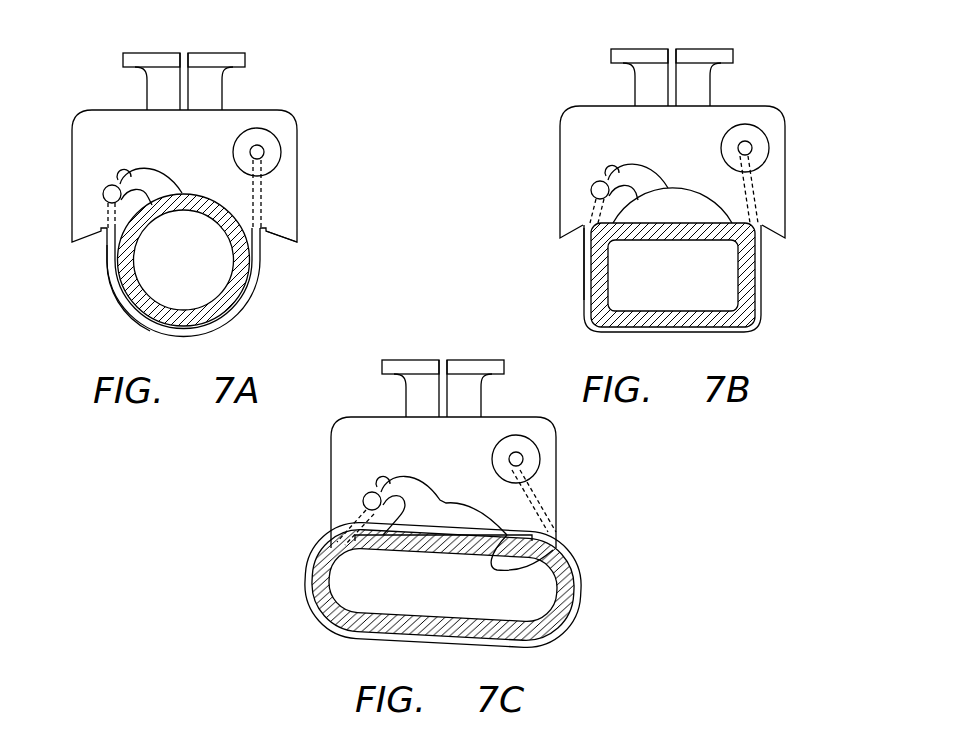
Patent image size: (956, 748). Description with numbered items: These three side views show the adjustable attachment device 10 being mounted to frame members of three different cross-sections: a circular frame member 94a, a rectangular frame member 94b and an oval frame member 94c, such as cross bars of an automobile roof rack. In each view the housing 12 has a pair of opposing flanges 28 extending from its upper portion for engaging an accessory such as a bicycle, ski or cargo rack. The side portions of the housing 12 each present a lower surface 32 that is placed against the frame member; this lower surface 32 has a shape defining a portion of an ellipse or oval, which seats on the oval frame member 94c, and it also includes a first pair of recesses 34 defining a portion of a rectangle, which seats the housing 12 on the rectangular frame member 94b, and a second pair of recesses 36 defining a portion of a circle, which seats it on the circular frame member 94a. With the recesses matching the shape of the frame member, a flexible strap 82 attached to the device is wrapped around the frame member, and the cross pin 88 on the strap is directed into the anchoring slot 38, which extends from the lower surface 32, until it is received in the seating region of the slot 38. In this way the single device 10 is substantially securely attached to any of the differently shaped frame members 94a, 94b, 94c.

In FIG. 7A, the attachment device 10 is at (316, 120).
In FIG. 7B, the attachment device 10 is at (792, 87).
In FIG. 7C, the attachment device 10 is at (608, 516).
In FIG. 7A, the housing 12 is at (298, 167).
In FIG. 7B, the housing 12 is at (787, 163).
In FIG. 7C, the housing 12 is at (559, 468).
In FIG. 7A, the flanges 28 is at (213, 52).
In FIG. 7B, the flanges 28 is at (701, 48).
In FIG. 7C, the flanges 28 is at (472, 359).
In FIG. 7A, the lower surface 32 is at (281, 243).
In FIG. 7C, the lower surface 32 is at (553, 550).
In FIG. 7B, the first pair of recesses 34 is at (584, 239).
In FIG. 7A, the second pair of recesses 36 is at (153, 229).
In FIG. 7A, the slot 38 is at (119, 178).
In FIG. 7B, the slot 38 is at (607, 177).
In FIG. 7C, the slot 38 is at (380, 488).
In FIG. 7A, the flexible strap 82 is at (249, 308).
In FIG. 7B, the flexible strap 82 is at (764, 292).
In FIG. 7C, the flexible strap 82 is at (574, 619).
In FIG. 7A, the cross pin 88 is at (103, 196).
In FIG. 7B, the cross pin 88 is at (591, 191).
In FIG. 7C, the cross pin 88 is at (363, 504).
In FIG. 7A, the circular frame member 94a is at (107, 300).
In FIG. 7B, the rectangular frame member 94b is at (755, 327).
In FIG. 7C, the oval frame member 94c is at (318, 624).